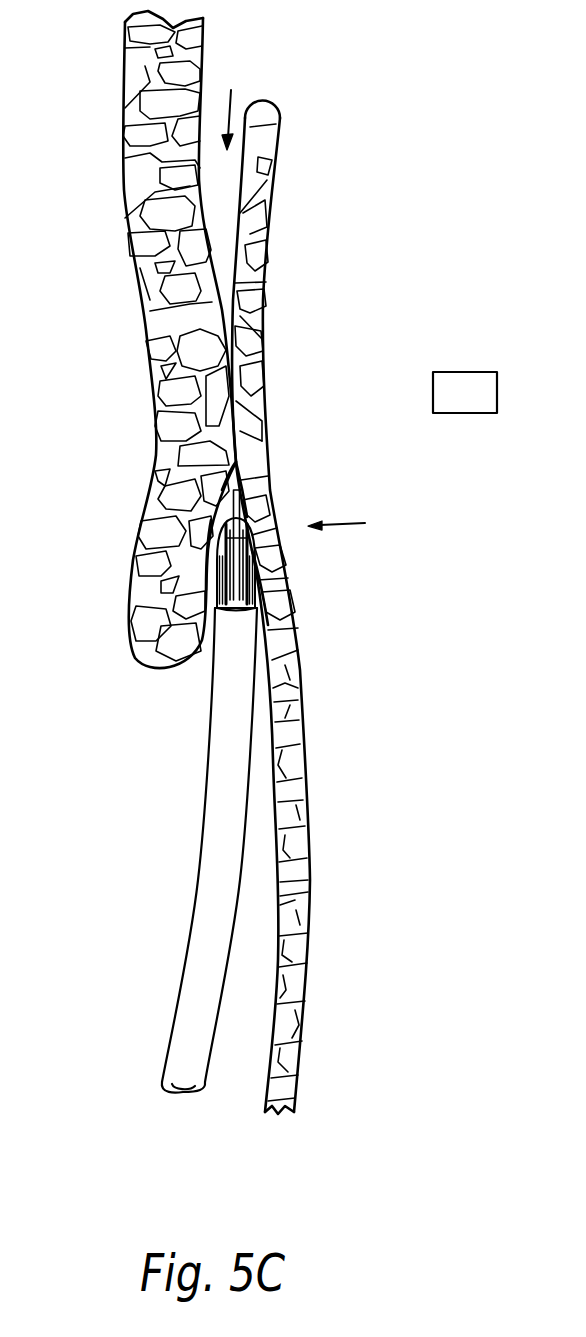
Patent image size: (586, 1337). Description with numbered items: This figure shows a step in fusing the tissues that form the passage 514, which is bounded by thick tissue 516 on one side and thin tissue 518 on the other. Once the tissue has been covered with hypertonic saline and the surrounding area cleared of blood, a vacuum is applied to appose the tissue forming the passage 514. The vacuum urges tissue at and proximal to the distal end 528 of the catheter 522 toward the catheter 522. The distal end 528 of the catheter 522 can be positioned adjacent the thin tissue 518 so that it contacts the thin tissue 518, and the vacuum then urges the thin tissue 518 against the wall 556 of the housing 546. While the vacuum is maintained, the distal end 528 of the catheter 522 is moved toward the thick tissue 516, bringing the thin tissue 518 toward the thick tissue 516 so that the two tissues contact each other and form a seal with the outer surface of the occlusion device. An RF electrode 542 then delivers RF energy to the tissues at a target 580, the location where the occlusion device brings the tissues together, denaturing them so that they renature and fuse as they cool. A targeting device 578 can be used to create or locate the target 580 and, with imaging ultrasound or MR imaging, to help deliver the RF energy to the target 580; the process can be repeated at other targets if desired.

The passage 514 is at (233, 104).
The thick tissue 516 is at (124, 133).
The thin tissue 518 is at (270, 162).
The catheter 522 is at (216, 582).
The distal end 528 is at (359, 523).
The RF electrode 542 is at (256, 584).
The housing 546 is at (224, 512).
The wall 556 is at (245, 523).
The targeting device 578 is at (465, 392).
The target 580 is at (210, 540).